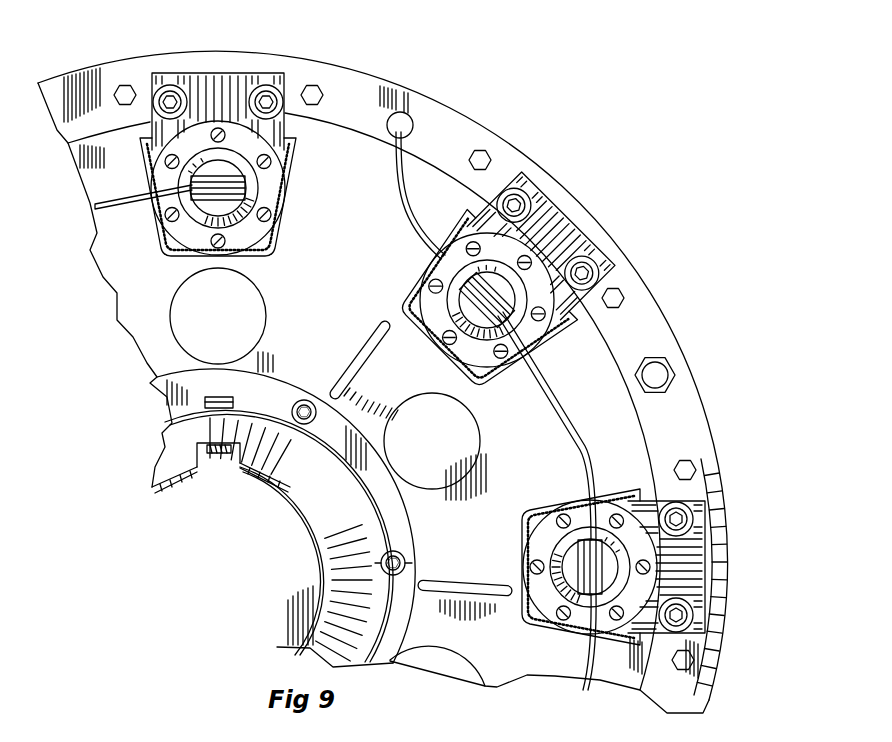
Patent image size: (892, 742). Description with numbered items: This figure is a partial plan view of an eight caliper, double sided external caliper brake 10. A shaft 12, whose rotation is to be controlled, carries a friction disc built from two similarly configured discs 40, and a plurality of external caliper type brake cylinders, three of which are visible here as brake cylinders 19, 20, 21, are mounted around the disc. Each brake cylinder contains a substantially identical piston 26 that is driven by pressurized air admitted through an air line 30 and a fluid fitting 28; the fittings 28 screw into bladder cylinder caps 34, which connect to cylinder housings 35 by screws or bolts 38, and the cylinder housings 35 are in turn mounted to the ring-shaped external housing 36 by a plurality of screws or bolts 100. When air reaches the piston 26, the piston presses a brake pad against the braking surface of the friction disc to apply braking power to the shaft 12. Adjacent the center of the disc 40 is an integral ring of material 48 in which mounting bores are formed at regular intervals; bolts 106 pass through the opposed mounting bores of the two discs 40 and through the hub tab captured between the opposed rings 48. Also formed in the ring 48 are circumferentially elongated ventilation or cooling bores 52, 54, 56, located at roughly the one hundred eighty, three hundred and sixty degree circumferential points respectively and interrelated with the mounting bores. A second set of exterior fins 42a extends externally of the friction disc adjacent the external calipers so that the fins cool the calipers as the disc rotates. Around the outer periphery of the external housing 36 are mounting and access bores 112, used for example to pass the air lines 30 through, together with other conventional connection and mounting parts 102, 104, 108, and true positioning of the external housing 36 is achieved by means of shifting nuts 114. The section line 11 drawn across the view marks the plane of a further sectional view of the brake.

The external caliper brake 10 is at (217, 77).
The section line 11- 11 is at (270, 582).
The shaft 12 is at (201, 736).
The brake cylinder 19 is at (722, 562).
The brake cylinder 20 is at (592, 228).
The brake cylinder 21 is at (286, 70).
The piston 26 is at (300, 164).
The fluid fitting 28 is at (197, 203).
The air line 30 is at (148, 200).
The bladder cylinder cap 34 is at (278, 215).
The cylinder housing 35 is at (300, 125).
The external housing 36 is at (452, 124).
The screws or bolts 38 is at (232, 243).
The disc 40 is at (97, 284).
The exterior fins 42a is at (375, 322).
The integral ring 48 is at (158, 396).
The cooling bore 52 is at (430, 645).
The cooling bore 54 is at (430, 400).
The cooling bore 56 is at (172, 333).
The screws or bolts 100 is at (265, 90).
The connection and mounting part 102 is at (190, 480).
The connection and mounting part 104 is at (222, 465).
The bolts 106 is at (305, 400).
The connection and mounting part 108 is at (318, 88).
The mounting and access bore 112 is at (405, 115).
The shifting nut 114 is at (670, 358).